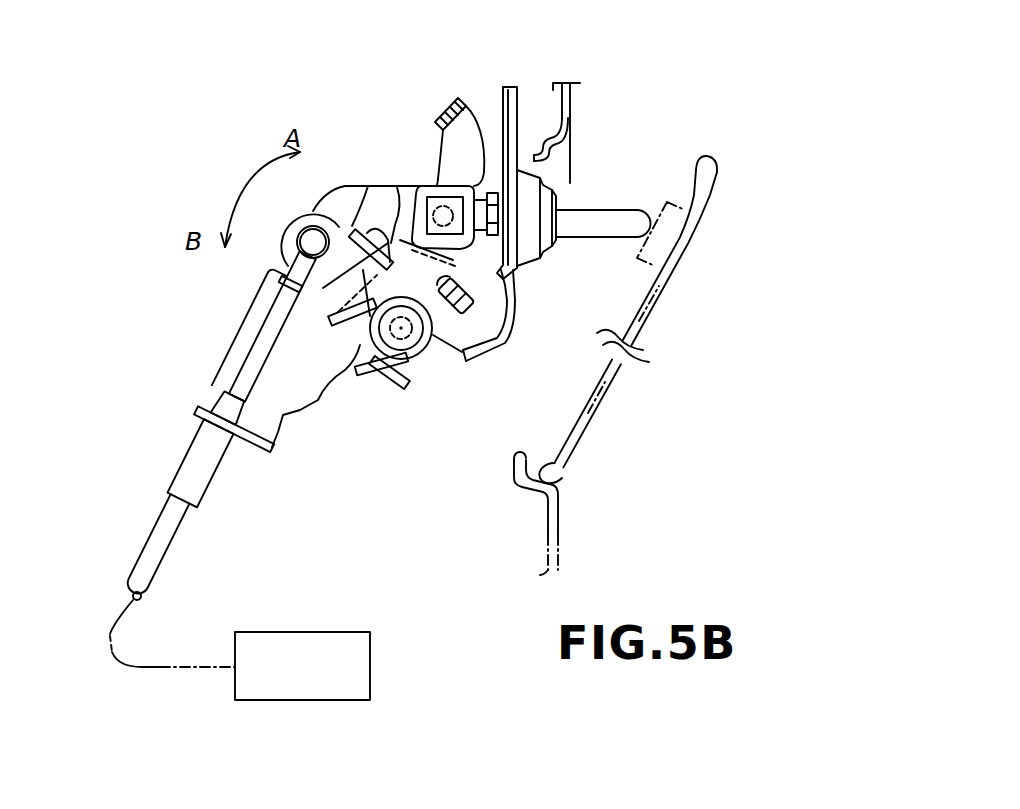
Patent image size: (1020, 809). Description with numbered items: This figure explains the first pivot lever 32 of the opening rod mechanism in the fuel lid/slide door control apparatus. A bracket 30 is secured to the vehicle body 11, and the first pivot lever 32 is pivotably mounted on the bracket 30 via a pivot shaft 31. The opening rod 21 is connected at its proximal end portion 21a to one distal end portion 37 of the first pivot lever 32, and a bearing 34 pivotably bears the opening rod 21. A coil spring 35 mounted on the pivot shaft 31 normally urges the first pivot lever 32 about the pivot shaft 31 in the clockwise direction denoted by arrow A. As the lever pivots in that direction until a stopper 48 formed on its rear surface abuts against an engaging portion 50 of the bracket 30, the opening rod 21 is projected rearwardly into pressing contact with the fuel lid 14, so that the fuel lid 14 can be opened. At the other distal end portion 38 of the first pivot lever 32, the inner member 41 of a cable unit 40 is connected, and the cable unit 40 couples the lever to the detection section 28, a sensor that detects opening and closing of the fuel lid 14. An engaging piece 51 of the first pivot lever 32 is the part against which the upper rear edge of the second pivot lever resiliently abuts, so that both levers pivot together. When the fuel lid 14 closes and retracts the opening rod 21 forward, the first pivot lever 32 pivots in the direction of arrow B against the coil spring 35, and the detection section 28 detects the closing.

The vehicle body 11 is at (560, 527).
The fuel lid 14 is at (664, 285).
The opening rod 21 is at (614, 208).
The proximal end portion 21a is at (466, 100).
The detection section 28 is at (372, 664).
The bracket 30 is at (318, 402).
The pivot shaft 31 is at (402, 345).
The first pivot lever 32 is at (349, 228).
The bearing 34 is at (534, 266).
The coil spring 35 is at (432, 342).
The distal end portion 37 is at (397, 187).
The distal end portion 38 is at (291, 214).
The cable unit 40 is at (166, 491).
The inner member 41 is at (240, 348).
The stopper 48 is at (468, 312).
The engaging portion 50 is at (443, 265).
The engaging piece 51 is at (366, 334).